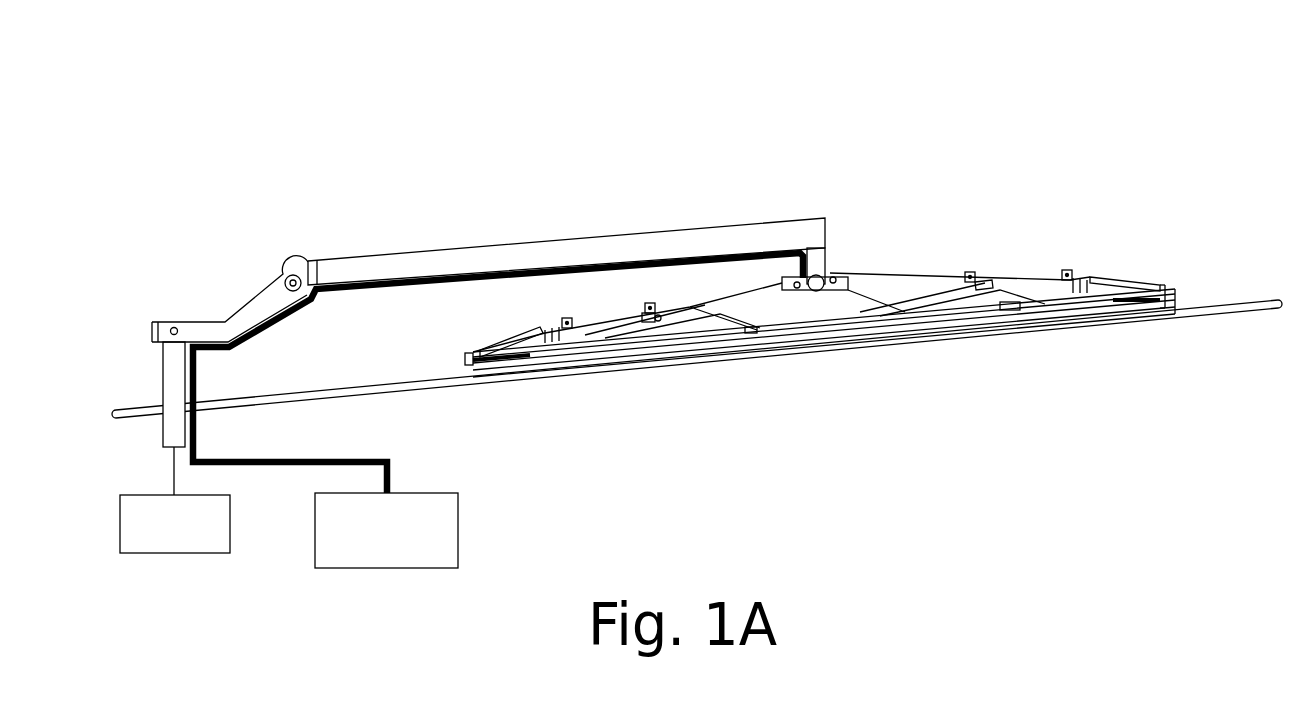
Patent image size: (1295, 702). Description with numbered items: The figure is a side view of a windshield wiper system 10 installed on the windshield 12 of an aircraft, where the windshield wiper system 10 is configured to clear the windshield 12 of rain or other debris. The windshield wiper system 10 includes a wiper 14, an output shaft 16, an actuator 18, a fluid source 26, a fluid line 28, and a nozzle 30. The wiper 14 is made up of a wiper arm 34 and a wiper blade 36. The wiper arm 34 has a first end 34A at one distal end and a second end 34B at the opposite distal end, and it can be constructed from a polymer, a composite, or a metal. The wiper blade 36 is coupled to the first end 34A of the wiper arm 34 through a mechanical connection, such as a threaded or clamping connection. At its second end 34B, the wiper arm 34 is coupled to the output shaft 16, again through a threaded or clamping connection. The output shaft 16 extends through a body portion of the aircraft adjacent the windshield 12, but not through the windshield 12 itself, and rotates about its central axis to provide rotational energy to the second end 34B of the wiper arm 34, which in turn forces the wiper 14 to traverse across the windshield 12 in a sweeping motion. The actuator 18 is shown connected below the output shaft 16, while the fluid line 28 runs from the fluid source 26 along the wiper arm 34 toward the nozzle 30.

The windshield wiper system 10 is at (288, 159).
The windshield 12 is at (1216, 321).
The wiper 14 is at (605, 170).
The output shaft 16 is at (159, 386).
The actuator 18 is at (175, 524).
The fluid source 26 is at (386, 530).
The fluid line 28 is at (394, 466).
The nozzle 30 is at (967, 264).
The wiper arm 34 is at (461, 241).
The first end 34A is at (803, 206).
The second end 34B is at (186, 304).
The wiper blade 36 is at (1046, 270).